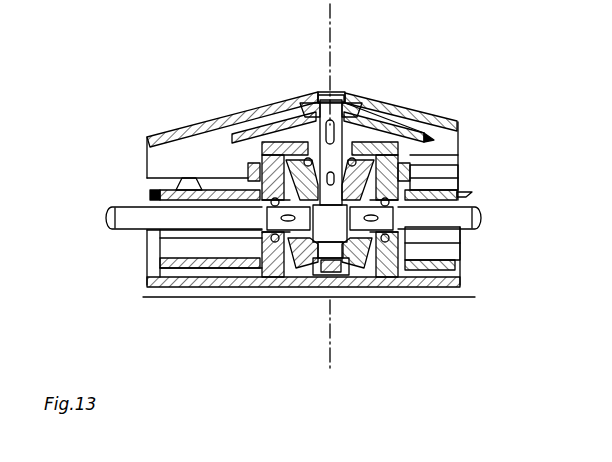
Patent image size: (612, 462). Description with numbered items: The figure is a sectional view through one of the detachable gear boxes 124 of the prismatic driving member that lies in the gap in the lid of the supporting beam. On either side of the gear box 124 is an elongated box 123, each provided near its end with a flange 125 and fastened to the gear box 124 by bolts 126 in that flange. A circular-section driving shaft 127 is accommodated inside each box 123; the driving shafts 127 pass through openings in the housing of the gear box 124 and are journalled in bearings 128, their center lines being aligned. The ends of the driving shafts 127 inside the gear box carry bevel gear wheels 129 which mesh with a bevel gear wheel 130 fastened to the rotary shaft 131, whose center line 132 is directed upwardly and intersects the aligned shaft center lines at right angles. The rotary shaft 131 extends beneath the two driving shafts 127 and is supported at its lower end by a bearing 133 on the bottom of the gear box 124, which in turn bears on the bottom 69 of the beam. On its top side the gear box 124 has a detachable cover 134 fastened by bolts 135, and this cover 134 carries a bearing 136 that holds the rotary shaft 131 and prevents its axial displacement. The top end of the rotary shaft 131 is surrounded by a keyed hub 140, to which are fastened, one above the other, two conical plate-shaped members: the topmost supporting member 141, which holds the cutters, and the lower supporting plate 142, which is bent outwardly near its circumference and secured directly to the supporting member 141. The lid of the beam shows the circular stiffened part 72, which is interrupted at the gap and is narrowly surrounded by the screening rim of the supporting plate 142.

The bottom 69 is at (192, 288).
The stiffened part 72 is at (189, 176).
The box 123 is at (148, 265).
The gear box 124 is at (279, 288).
The flange 125 is at (253, 288).
The bolts 126 is at (455, 172).
The driving shaft 127 is at (107, 216).
The bearings 128 is at (262, 239).
The bevel gear wheels 129 is at (313, 288).
The bevel gear wheel 130 is at (412, 157).
The rotary shaft 131 is at (361, 106).
The center line 132 is at (328, 18).
The bearing 133 is at (348, 288).
The detachable cover 134 is at (396, 140).
The bolts 135 is at (273, 138).
The bearing 136 is at (262, 157).
The hub 140 is at (308, 100).
The supporting member 141 is at (165, 137).
The supporting plate 142 is at (240, 127).